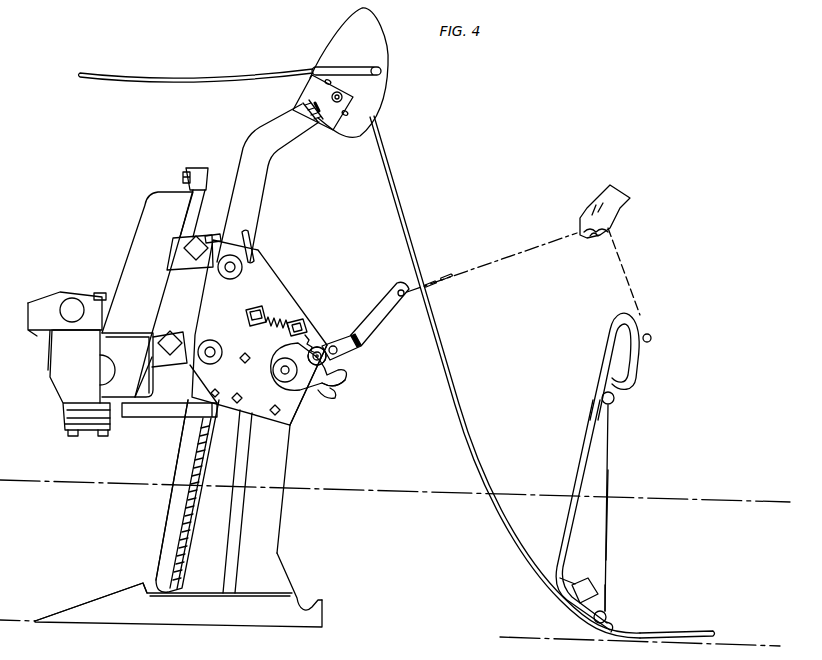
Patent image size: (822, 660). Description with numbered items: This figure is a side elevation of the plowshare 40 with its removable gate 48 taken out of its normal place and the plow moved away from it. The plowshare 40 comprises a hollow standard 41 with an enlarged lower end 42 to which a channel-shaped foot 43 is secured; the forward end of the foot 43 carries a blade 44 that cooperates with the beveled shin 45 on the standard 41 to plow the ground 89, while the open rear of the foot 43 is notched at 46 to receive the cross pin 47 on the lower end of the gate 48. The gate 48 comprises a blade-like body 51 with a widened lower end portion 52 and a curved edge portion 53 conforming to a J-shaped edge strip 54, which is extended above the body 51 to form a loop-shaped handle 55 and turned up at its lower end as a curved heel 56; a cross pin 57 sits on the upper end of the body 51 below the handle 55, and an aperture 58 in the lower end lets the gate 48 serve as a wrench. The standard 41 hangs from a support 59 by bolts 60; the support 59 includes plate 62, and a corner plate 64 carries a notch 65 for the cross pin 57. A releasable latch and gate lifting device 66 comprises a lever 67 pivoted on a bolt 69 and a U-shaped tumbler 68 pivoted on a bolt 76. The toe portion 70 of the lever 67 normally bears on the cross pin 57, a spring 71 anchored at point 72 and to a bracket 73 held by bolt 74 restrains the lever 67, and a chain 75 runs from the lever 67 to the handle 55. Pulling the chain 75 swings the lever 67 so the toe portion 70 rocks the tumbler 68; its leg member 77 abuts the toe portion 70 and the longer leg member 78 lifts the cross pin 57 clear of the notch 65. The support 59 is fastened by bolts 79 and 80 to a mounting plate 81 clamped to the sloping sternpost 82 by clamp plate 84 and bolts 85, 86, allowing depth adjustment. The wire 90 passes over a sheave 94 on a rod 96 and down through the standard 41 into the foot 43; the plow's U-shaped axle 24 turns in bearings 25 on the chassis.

The U-shaped axle 24 is at (72, 305).
The bearings 25 is at (96, 297).
The plowshare 40 is at (177, 457).
The hollow standard 41 is at (272, 518).
The enlarged lower end 42 is at (262, 594).
The foot 43 is at (168, 618).
The blade 44 is at (92, 607).
The beveled shin 45 is at (175, 515).
The notch 46 is at (310, 605).
The cross pin 47 is at (610, 618).
The removable gate 48 is at (612, 456).
The blade-like body 51 is at (607, 514).
The widened lower end portion 52 is at (612, 600).
The curved edge portion 53 is at (563, 581).
The J-shaped edge strip 54 is at (584, 469).
The loop-shaped handle 55 is at (641, 363).
The curved heel 56 is at (614, 628).
The cross pin 57 is at (616, 398).
The aperture 58 is at (597, 589).
The support 59 is at (292, 294).
The bolts 60 is at (233, 348).
The plate 62 is at (266, 271).
The plate 64 is at (322, 408).
The notch 65 is at (326, 395).
The releasable latch and gate lifting device 66 is at (333, 361).
The lever 67 is at (393, 312).
The tumbler 68 is at (290, 410).
The bolt 69 is at (323, 346).
The toe portion 70 is at (321, 378).
The spring 71 is at (277, 318).
The point 72 is at (335, 346).
The bracket 73 is at (262, 310).
The bolt 74 is at (262, 322).
The chain 75 is at (448, 275).
The bolt 76 is at (281, 373).
The leg member 77 is at (290, 348).
The leg member 78 is at (305, 397).
The bolt 79 is at (218, 272).
The bolt 80 is at (198, 348).
The mounting plate 81 is at (223, 236).
The sternpost 82 is at (199, 197).
The clamp plate 84 is at (168, 282).
The bolt 85 is at (184, 249).
The bolt 86 is at (164, 335).
The ground 89 is at (426, 489).
The wire 90 is at (165, 74).
The sheave 94 is at (308, 95).
The rod 96 is at (261, 178).